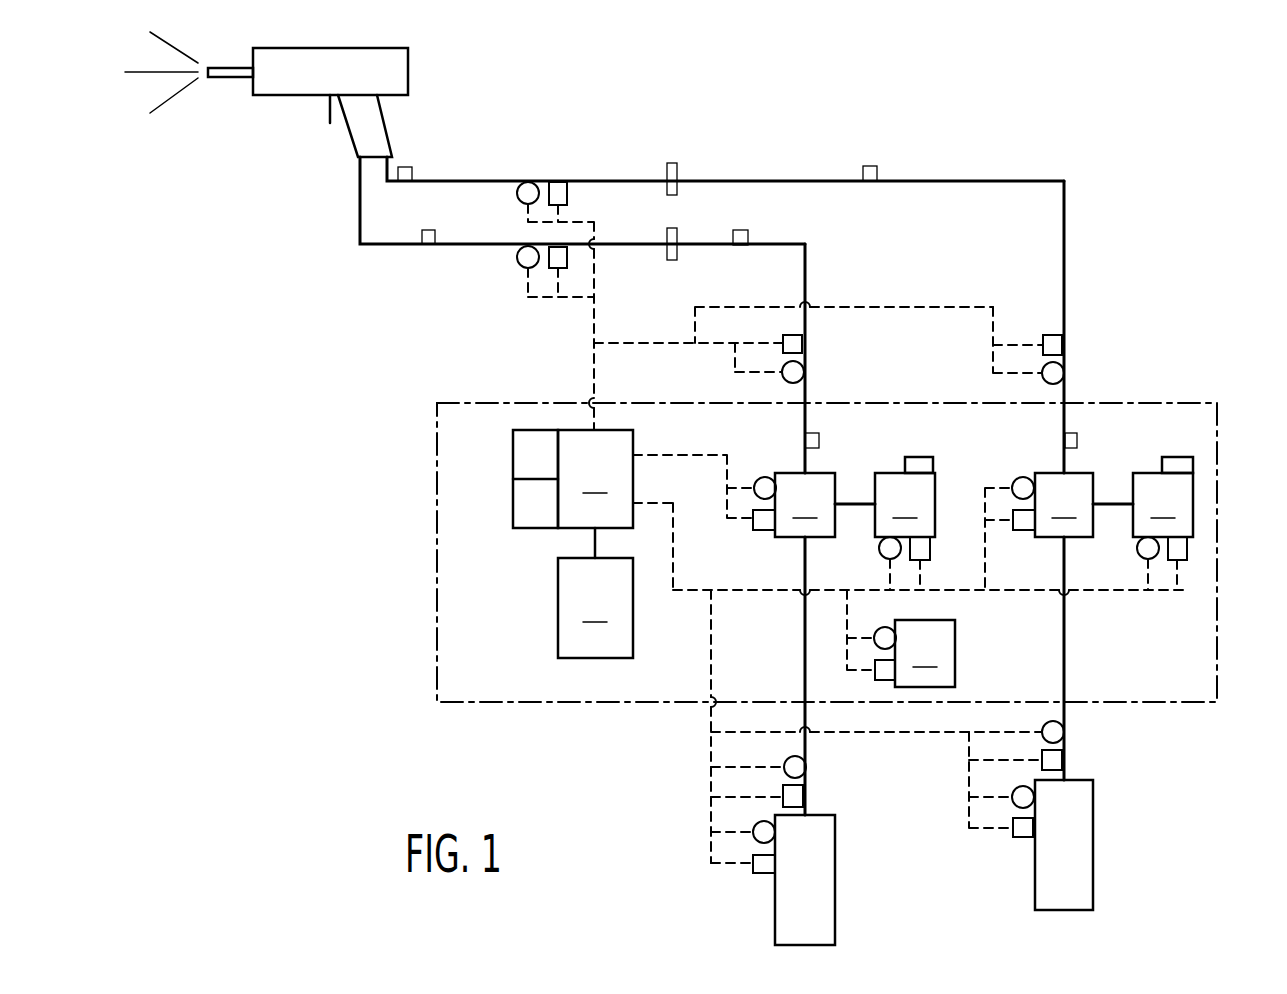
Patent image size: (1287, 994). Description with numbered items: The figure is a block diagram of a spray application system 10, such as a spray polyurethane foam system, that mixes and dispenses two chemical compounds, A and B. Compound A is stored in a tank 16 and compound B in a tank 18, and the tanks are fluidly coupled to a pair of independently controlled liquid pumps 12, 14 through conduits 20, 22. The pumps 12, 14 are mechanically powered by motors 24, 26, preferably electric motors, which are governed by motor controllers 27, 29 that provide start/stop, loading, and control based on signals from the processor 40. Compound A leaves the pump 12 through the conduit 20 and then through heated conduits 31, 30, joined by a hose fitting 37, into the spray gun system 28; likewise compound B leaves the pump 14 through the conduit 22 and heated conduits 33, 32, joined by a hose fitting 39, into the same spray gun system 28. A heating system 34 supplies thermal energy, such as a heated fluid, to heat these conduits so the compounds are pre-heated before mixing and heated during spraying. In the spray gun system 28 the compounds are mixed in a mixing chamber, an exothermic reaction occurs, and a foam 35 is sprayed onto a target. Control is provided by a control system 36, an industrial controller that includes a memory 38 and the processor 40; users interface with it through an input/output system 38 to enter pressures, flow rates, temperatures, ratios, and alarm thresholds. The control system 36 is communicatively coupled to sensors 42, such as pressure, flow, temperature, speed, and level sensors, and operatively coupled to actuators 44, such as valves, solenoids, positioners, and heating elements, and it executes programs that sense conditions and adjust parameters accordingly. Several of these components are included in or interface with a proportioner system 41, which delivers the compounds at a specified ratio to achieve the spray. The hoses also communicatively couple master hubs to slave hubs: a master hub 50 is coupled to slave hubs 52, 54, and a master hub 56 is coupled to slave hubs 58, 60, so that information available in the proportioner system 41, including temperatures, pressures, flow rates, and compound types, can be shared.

The spray application system 10 is at (1168, 132).
The liquid pump 12 is at (825, 505).
The liquid pump 14 is at (1084, 505).
The tank 16 is at (835, 893).
The tank 18 is at (1093, 857).
The conduit 20 is at (805, 648).
The conduit 22 is at (1065, 658).
The motor 24 is at (905, 505).
The motor 26 is at (1163, 505).
The motor controller 27 is at (918, 457).
The spray gun system 28 is at (410, 72).
The motor controller 29 is at (1177, 457).
The heated conduit 30 is at (382, 247).
The heated conduit 31 is at (807, 268).
The heated conduit 32 is at (487, 178).
The heated conduit 33 is at (1067, 203).
The heating system 34 is at (925, 653).
The foam 35 is at (178, 123).
The control system 36 is at (595, 494).
The hose fitting 37 is at (677, 227).
The memory 38 is at (513, 457).
The hose fitting 39 is at (677, 163).
The processor 40 is at (513, 505).
The proportioner system 41 is at (1217, 553).
The sensor 42 is at (518, 197).
The actuator 44 is at (567, 193).
The master hub 50 is at (820, 437).
The slave hub 52 is at (743, 230).
The slave hub 54 is at (427, 247).
The master hub 56 is at (1077, 440).
The slave hub 58 is at (870, 165).
The slave hub 60 is at (413, 172).